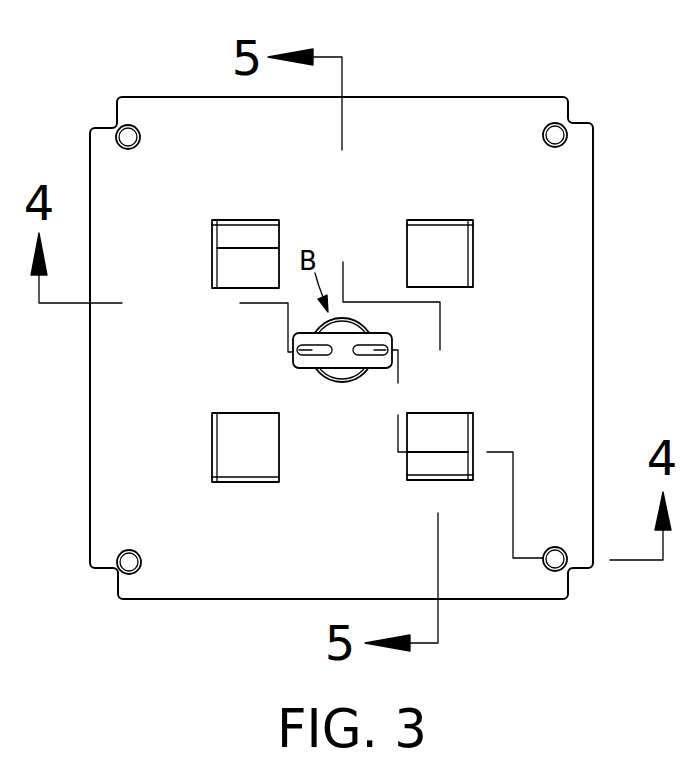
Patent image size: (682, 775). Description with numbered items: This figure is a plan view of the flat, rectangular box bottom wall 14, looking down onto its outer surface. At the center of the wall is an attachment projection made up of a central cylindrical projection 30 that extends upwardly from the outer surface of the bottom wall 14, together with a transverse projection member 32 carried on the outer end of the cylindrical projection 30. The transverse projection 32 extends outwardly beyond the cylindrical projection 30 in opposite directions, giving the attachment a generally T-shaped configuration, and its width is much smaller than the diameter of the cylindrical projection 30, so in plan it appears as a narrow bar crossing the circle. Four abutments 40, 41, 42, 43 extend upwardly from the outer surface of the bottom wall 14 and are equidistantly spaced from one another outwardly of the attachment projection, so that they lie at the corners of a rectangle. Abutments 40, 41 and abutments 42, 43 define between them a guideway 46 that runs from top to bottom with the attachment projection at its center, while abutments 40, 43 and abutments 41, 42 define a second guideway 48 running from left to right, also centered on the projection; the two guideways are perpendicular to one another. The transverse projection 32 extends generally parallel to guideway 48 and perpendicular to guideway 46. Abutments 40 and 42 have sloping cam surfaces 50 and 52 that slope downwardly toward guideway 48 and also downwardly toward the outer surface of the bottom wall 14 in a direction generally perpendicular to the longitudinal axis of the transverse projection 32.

The box bottom wall 14 is at (433, 97).
The central cylindrical projection 30 is at (348, 387).
The transverse projection member 32 is at (343, 343).
The abutment 40 is at (228, 222).
The abutment 41 is at (445, 220).
The abutment 42 is at (432, 482).
The abutment 43 is at (245, 482).
The guideway 46 is at (328, 227).
The guideway 48 is at (233, 362).
The sloping cam surface 50 is at (238, 272).
The sloping cam surface 52 is at (450, 427).